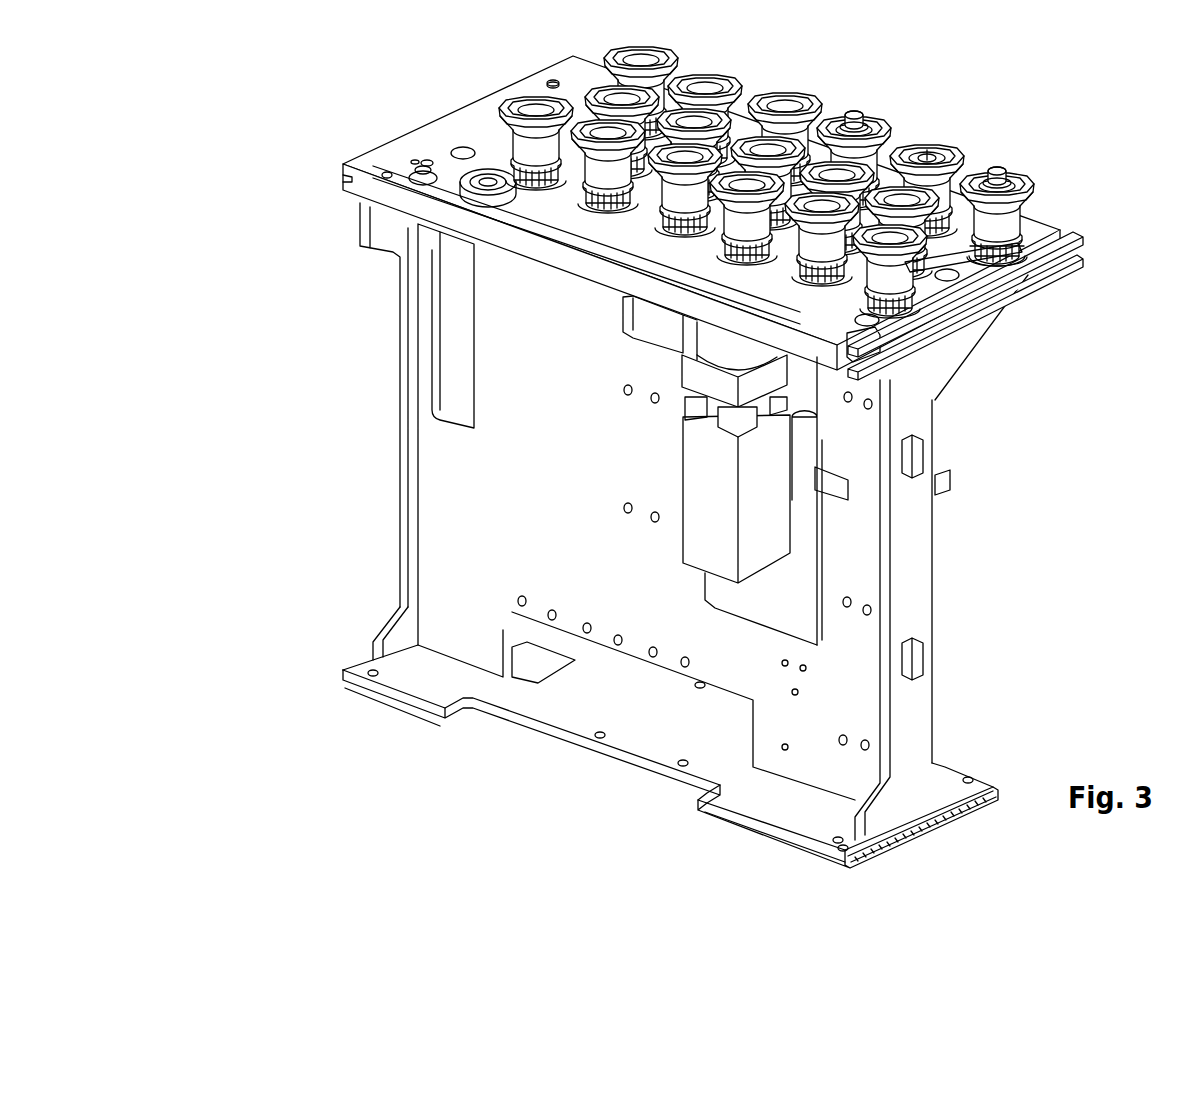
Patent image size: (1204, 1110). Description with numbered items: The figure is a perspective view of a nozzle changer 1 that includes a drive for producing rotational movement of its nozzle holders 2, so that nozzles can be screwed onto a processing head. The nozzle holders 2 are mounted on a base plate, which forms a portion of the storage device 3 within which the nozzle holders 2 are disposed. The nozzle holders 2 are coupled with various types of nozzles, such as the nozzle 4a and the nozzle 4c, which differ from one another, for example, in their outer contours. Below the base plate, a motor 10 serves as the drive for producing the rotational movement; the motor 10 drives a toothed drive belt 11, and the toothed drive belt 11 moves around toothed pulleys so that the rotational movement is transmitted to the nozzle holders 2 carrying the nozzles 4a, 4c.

The nozzle changer 1 is at (328, 186).
The nozzle holders 2 is at (886, 128).
The storage device 3 is at (463, 116).
The nozzle 4a is at (852, 118).
The nozzle 4c is at (936, 150).
The motor 10 is at (762, 513).
The toothed drive belt 11 is at (1003, 253).